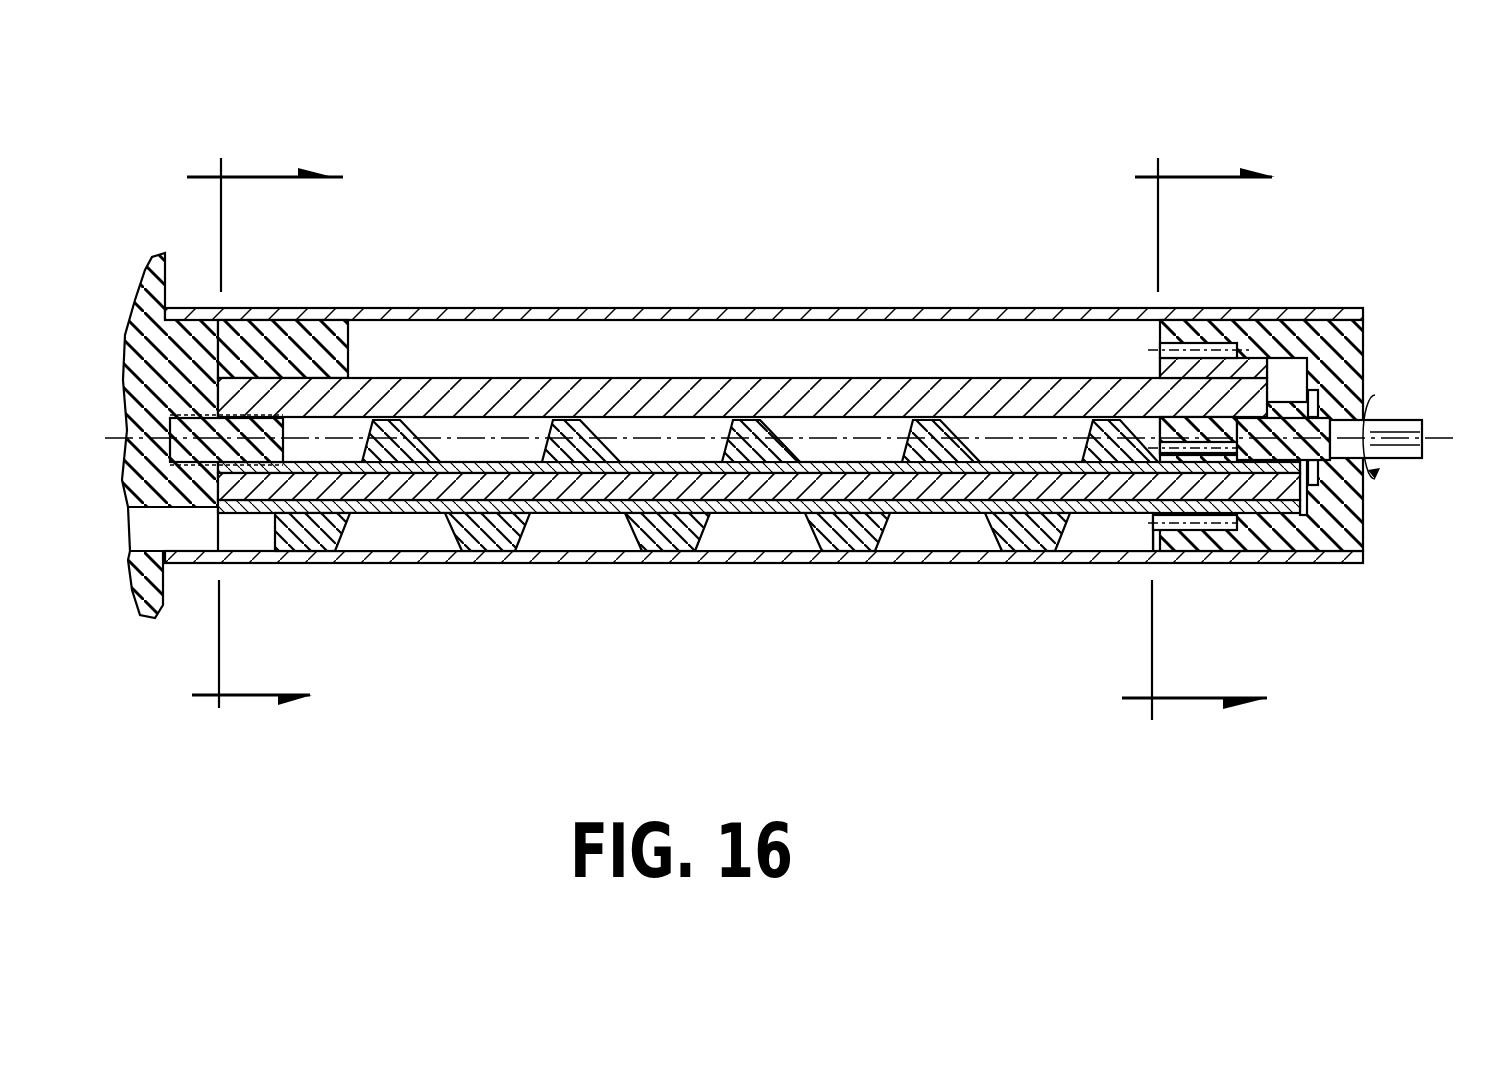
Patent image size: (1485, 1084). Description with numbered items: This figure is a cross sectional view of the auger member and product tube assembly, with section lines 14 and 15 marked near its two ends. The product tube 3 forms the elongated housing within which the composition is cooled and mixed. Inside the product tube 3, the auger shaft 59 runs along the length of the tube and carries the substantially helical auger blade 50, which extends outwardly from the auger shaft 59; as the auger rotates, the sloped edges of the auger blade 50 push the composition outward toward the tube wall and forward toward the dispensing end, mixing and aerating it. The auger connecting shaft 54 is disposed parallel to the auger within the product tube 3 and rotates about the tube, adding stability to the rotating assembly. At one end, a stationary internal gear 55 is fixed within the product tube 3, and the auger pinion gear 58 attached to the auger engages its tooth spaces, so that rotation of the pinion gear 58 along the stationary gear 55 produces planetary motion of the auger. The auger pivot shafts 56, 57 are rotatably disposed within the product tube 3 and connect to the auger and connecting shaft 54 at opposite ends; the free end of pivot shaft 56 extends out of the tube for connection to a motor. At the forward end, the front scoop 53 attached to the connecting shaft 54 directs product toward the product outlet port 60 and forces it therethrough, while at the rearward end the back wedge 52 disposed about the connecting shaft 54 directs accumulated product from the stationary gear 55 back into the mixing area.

The product tube 3 is at (705, 308).
The auger blade 50 is at (993, 523).
The back wedge 52 is at (1270, 365).
The front scoop 53 is at (350, 350).
The auger connecting shaft 54 is at (770, 378).
The stationary internal gear 55 is at (1155, 340).
The auger pivot shaft 56 is at (1395, 420).
The auger pivot shaft 57 is at (292, 440).
The auger pinion gear 58 is at (1235, 540).
The auger shaft 59 is at (898, 502).
The product outlet port 60 is at (193, 530).
The section line 14- 14 is at (293, 435).
The section line 15- 15 is at (1232, 439).